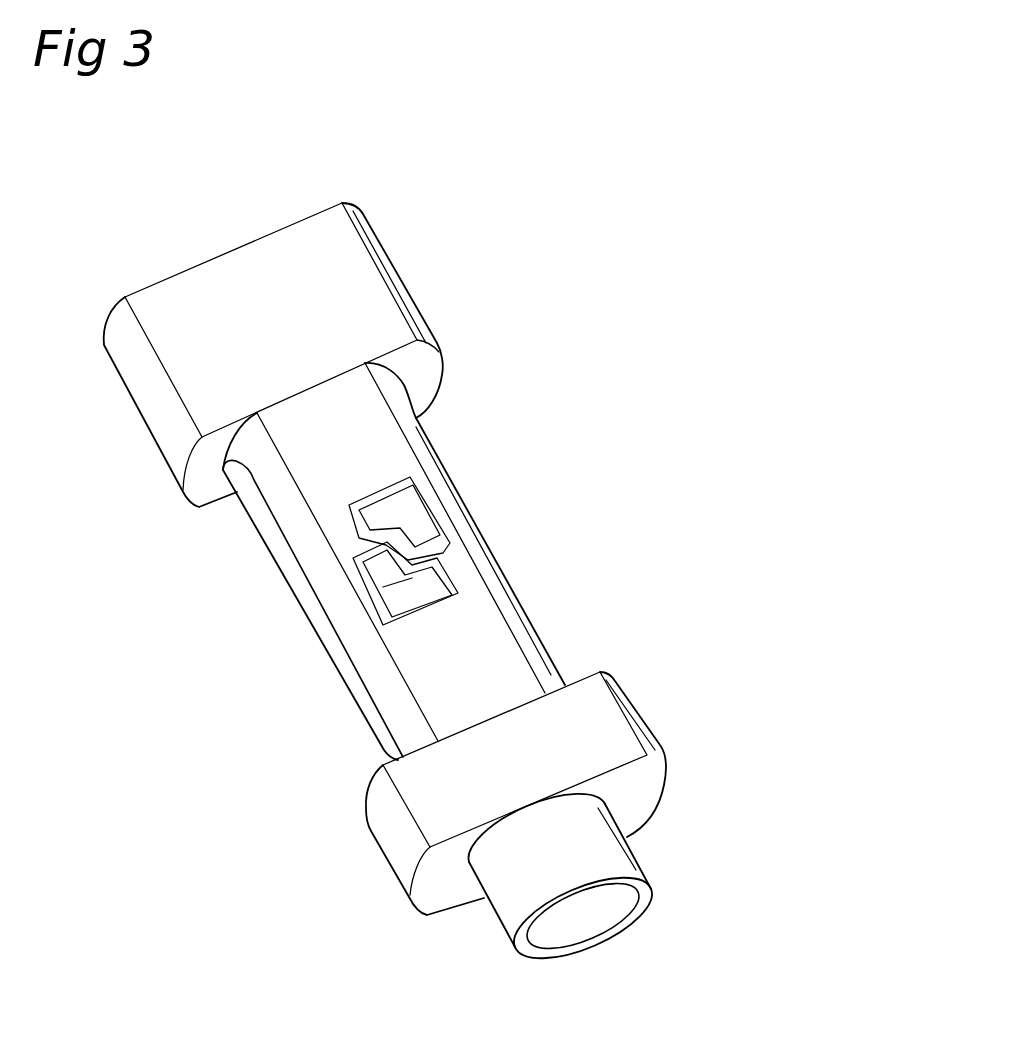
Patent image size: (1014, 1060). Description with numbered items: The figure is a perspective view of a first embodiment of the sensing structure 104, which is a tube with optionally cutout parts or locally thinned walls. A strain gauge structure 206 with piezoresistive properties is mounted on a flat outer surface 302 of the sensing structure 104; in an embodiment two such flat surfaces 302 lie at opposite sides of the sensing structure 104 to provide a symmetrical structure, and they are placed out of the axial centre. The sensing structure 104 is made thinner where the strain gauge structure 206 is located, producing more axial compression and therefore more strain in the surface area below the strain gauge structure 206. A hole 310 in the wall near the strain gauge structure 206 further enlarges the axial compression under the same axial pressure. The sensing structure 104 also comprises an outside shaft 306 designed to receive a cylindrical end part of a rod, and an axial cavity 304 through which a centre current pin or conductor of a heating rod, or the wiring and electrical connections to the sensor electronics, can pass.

The sensing structure 104 is at (503, 390).
The strain gauge structure 206 is at (412, 537).
The flat outer surface 302 is at (600, 730).
The axial cavity 304 is at (585, 920).
The outside shaft 306 is at (597, 860).
The hole 310 is at (337, 647).